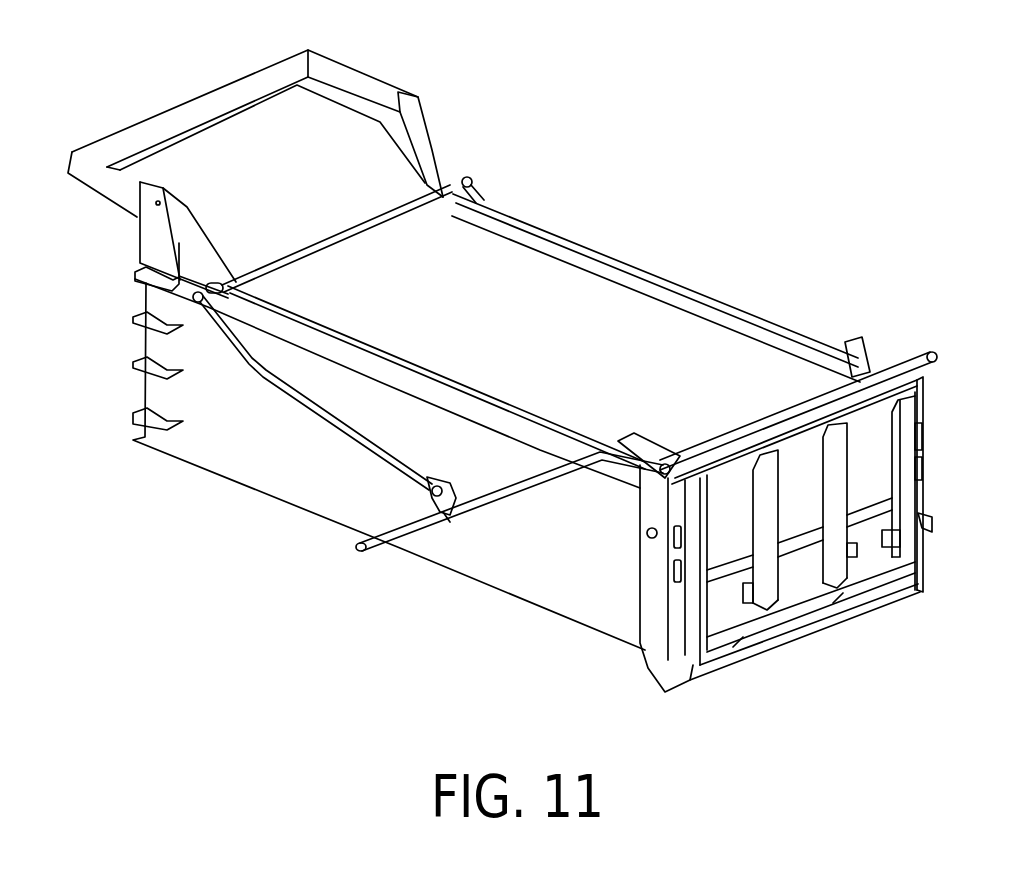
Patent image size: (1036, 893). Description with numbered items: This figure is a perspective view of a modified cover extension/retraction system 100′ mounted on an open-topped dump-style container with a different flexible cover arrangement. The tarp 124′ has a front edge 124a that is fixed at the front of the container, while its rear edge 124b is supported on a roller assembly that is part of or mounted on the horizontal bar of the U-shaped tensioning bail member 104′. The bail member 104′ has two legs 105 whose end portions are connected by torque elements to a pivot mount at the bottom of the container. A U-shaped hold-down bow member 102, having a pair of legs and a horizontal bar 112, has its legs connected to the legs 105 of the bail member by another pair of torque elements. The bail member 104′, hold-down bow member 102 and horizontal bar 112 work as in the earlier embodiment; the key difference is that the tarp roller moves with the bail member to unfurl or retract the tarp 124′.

The front edge 124a is at (208, 142).
The horizontal bar 112 is at (378, 226).
The tarp 124′ is at (590, 340).
The rear edge 124b is at (792, 412).
The hold-down bow member 102 is at (335, 428).
The bail member 104′ is at (420, 533).
The cover extension/retraction system 100′ is at (467, 533).
The legs 105 is at (530, 495).